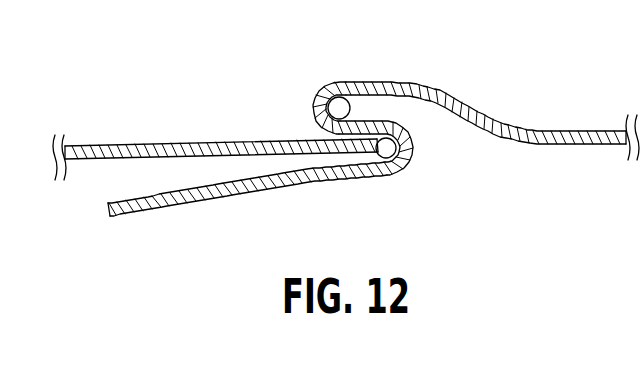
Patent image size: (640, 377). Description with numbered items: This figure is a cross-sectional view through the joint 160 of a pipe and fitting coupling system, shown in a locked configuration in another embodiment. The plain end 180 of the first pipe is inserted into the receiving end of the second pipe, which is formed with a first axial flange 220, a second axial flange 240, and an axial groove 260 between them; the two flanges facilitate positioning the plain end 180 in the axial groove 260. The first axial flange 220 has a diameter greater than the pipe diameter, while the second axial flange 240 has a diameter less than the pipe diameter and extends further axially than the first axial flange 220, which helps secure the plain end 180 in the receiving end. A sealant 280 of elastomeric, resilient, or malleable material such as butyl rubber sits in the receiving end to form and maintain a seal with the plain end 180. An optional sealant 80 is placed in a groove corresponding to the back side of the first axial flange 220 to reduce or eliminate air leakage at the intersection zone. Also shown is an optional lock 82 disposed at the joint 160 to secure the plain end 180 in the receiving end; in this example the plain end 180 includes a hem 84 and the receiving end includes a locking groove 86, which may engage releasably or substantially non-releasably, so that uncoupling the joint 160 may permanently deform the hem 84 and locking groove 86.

The joint 160 is at (373, 61).
The sealant 80 is at (338, 96).
The first axial flange 220 is at (311, 110).
The plain end 180 is at (190, 139).
The axial groove 260 is at (415, 150).
The sealant 280 is at (402, 171).
The second axial flange 240 is at (175, 214).
The lock 82 is at (339, 190).
The hem 84 is at (360, 178).
The locking groove 86 is at (333, 181).